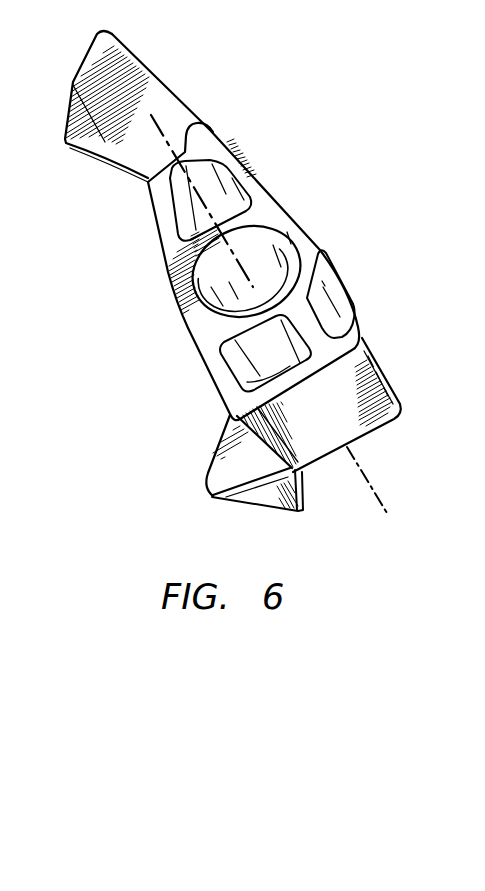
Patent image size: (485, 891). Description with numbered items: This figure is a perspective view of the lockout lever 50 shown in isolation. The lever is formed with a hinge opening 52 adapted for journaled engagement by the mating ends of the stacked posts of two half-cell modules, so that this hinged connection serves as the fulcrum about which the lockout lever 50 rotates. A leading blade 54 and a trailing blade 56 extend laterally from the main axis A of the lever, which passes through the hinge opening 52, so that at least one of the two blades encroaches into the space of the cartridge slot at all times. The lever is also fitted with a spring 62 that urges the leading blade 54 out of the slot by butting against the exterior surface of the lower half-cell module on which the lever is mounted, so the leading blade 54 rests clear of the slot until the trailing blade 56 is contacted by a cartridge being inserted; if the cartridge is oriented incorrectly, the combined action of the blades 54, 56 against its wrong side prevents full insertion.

The lockout lever 50 is at (249, 130).
The hinge opening 52 is at (250, 243).
The leading blade 54 is at (216, 474).
The trailing blade 56 is at (74, 121).
The spring 62 is at (257, 494).
The main axis A is at (380, 507).